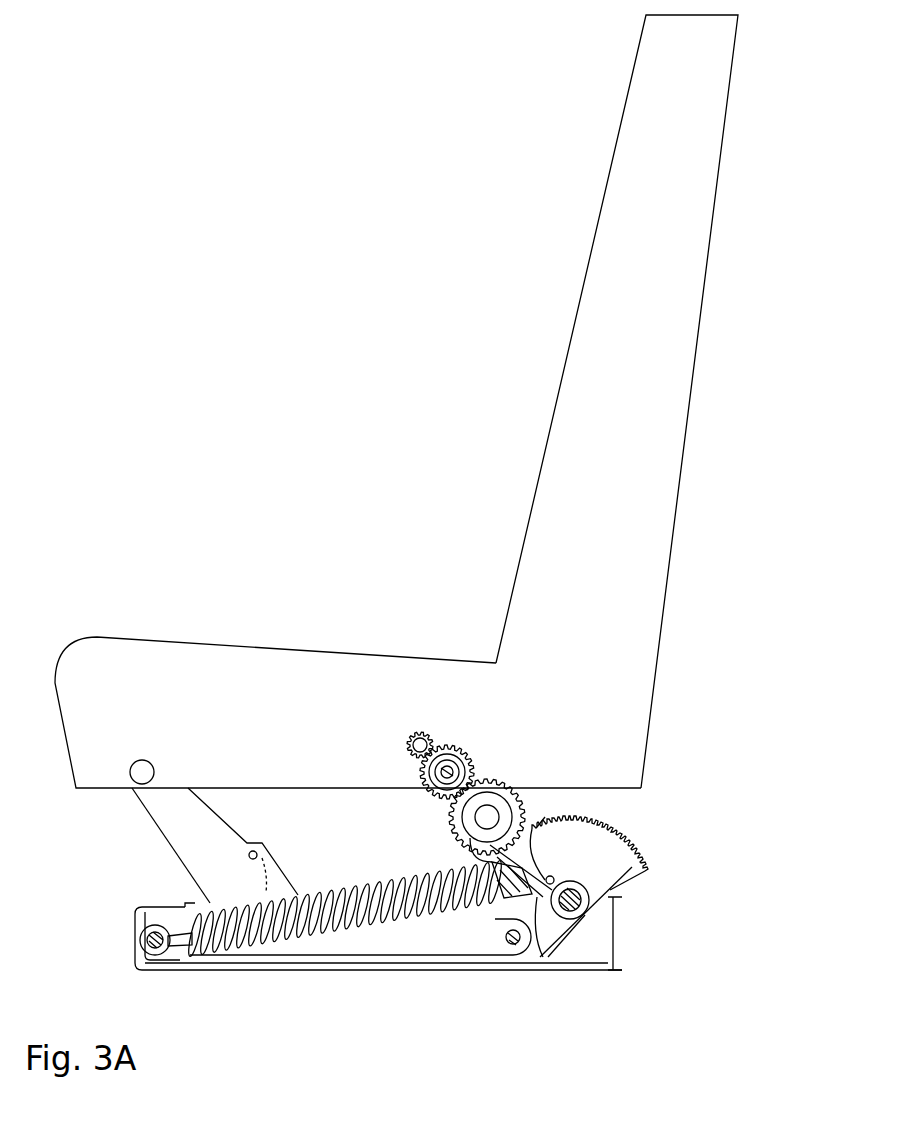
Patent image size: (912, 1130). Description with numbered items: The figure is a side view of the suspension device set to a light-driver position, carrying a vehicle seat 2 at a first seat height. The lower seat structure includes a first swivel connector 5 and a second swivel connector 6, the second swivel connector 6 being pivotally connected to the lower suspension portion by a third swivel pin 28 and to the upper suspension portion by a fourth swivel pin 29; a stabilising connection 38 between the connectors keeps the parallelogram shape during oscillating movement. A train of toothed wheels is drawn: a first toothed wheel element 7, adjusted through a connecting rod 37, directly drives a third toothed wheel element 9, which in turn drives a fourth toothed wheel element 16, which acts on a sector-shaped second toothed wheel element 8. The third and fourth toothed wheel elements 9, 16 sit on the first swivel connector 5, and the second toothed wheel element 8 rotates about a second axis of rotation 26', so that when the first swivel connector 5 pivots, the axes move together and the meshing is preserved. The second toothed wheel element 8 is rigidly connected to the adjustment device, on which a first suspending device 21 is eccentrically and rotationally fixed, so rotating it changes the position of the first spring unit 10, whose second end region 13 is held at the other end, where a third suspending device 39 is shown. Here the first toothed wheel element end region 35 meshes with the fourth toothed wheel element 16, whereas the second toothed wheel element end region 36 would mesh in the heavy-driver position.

The vehicle seat 2 is at (648, 83).
The first swivel connector 5 is at (497, 866).
The second swivel connector 6 is at (183, 833).
The first toothed wheel element 7 is at (418, 733).
The second toothed wheel element 8 is at (618, 850).
The third toothed wheel element 9 is at (450, 746).
The first spring unit 10 is at (337, 940).
The second end region of the spring unit 13 is at (165, 927).
The fourth toothed wheel element 16 is at (488, 778).
The first suspending device 21 is at (543, 955).
The second axis of rotation 26' is at (609, 913).
The third swivel pin 28 is at (262, 852).
The fourth swivel pin 29 is at (132, 772).
The first toothed wheel element end region 35 is at (537, 827).
The second toothed wheel element end region 36 is at (632, 867).
The connecting rod 37 is at (440, 768).
The stabilising connection 38 is at (463, 943).
The third suspending device 39 is at (135, 950).